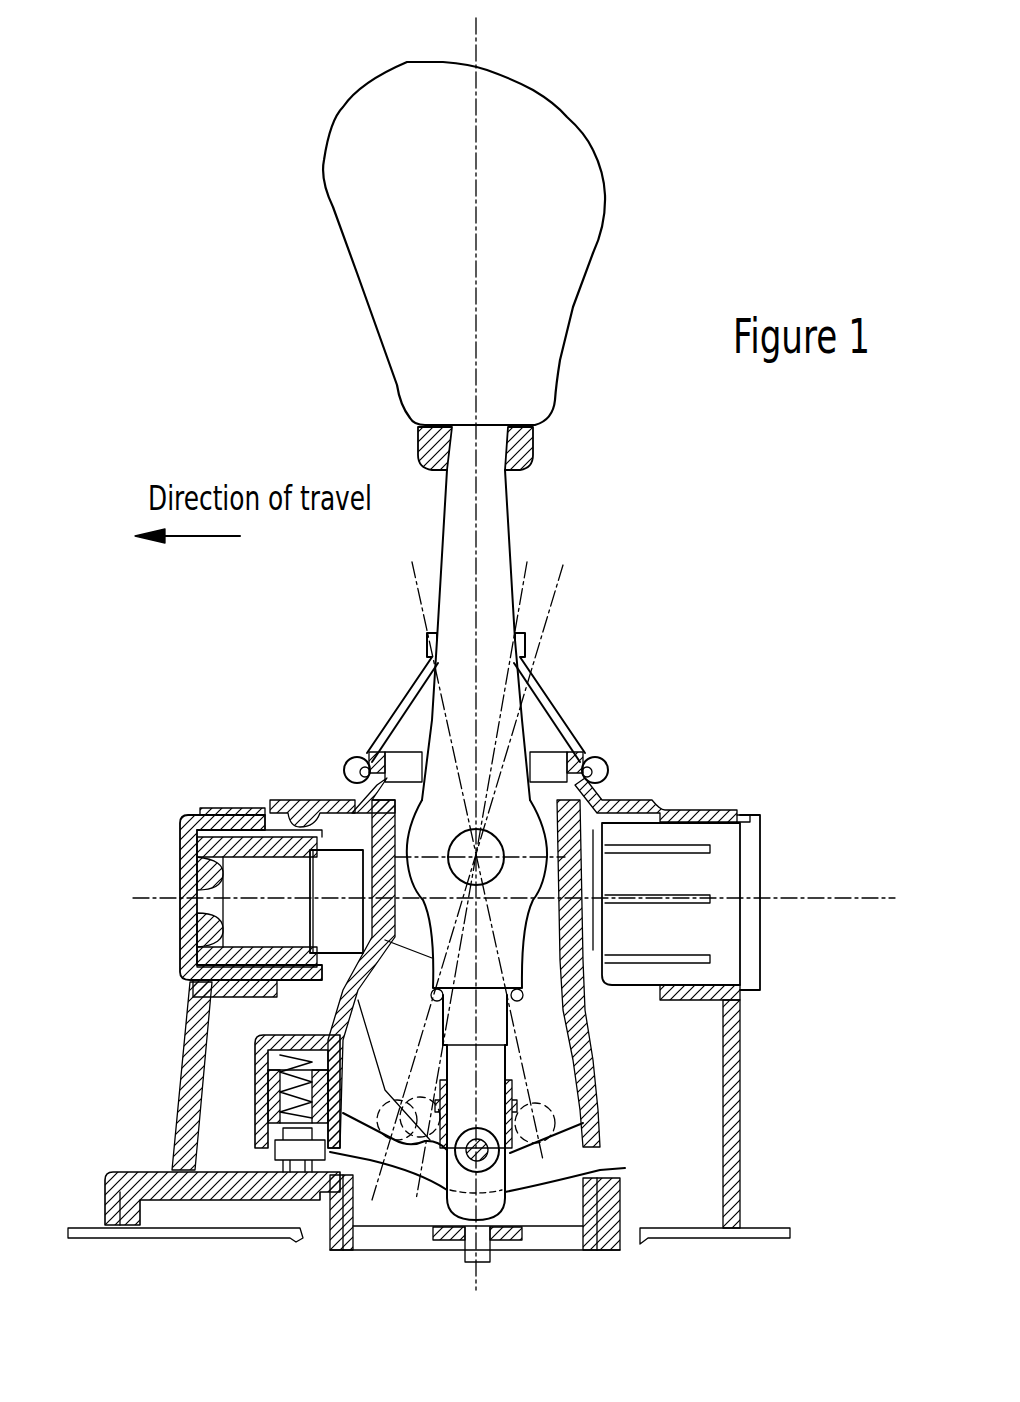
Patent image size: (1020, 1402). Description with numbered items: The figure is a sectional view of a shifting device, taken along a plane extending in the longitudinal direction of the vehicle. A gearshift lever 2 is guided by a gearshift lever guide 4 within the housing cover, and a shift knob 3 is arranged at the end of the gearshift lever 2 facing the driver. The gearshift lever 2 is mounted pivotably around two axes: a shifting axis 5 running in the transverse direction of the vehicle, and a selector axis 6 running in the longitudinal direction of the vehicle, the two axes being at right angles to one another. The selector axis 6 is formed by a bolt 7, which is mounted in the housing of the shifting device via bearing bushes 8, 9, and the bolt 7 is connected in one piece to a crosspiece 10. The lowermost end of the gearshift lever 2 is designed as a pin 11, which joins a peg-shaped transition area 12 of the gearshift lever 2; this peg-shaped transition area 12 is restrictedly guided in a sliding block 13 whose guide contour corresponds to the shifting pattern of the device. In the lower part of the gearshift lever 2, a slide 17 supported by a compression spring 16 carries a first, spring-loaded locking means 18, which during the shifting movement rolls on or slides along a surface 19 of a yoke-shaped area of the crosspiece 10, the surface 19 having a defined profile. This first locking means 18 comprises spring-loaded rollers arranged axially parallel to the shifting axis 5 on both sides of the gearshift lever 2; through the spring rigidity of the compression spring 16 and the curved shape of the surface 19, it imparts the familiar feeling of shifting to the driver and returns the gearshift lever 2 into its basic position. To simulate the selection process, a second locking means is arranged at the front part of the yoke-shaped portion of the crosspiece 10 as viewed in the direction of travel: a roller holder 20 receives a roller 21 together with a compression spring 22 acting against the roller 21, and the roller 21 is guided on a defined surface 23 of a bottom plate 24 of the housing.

The gearshift lever 2 is at (488, 492).
The shift knob 3 is at (570, 217).
The gearshift lever guide 4 is at (545, 765).
The shifting axis 5 is at (460, 778).
The selector axis 6 is at (340, 875).
The bolt 7 is at (258, 890).
The bearing bush 8 is at (176, 832).
The bearing bush 9 is at (640, 875).
The crosspiece 10 is at (573, 1013).
The pin 11 is at (465, 1245).
The peg-shaped transition area 12 is at (490, 1205).
The sliding block 13 is at (400, 1190).
The compression spring 16 is at (592, 1030).
The slide 17 is at (515, 1100).
The first locking means 18 is at (545, 1150).
The surface 19 is at (520, 1125).
The roller holder 20 is at (260, 1063).
The roller 21 is at (290, 1148).
The compression spring 22 is at (290, 1100).
The surface 23 is at (292, 1180).
The bottom plate 24 is at (282, 1208).